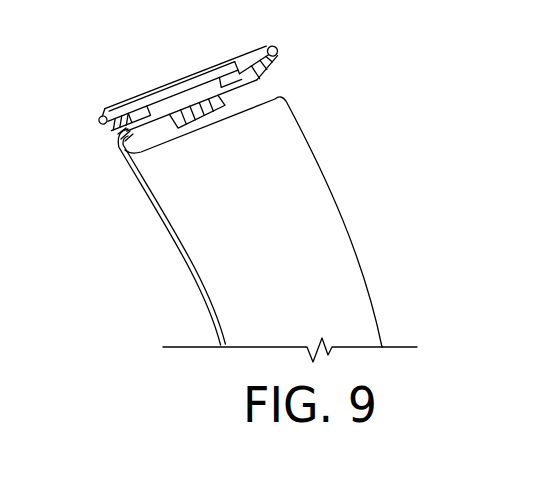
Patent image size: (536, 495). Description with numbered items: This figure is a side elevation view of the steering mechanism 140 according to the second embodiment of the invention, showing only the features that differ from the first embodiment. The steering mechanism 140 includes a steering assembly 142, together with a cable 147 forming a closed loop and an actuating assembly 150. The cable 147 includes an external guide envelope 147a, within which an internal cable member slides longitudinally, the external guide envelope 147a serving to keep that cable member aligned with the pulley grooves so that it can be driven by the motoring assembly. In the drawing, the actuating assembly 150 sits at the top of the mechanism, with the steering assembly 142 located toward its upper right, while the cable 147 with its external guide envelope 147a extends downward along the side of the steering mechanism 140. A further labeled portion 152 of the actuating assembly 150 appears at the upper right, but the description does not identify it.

The steering mechanism 140 is at (196, 222).
The steering assembly 142 is at (268, 79).
The cable 147 is at (200, 273).
The external guide envelope 147a is at (215, 312).
The actuating assembly 150 is at (217, 83).
The lid tip / top portion 152 is at (245, 50).